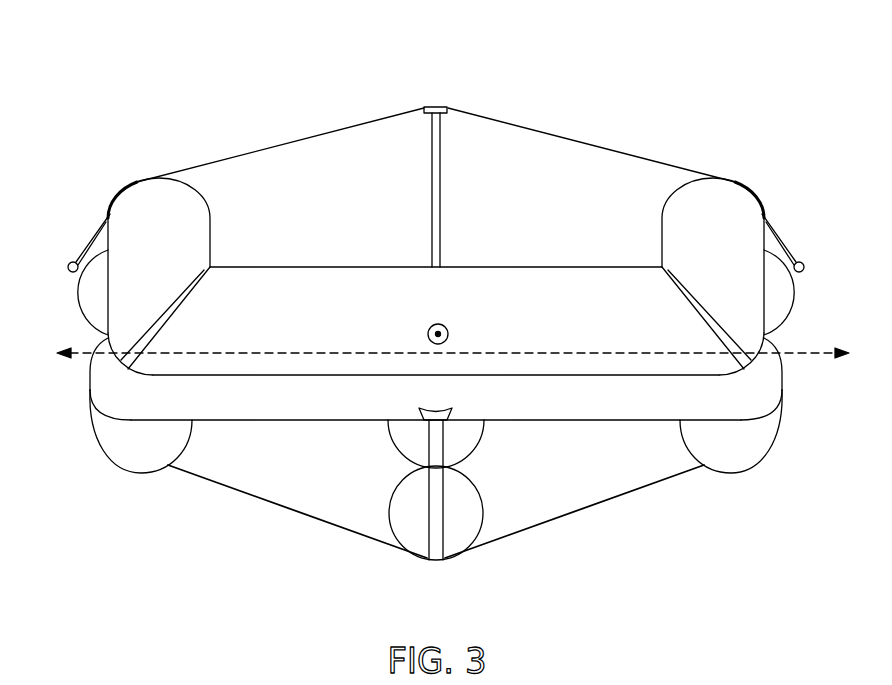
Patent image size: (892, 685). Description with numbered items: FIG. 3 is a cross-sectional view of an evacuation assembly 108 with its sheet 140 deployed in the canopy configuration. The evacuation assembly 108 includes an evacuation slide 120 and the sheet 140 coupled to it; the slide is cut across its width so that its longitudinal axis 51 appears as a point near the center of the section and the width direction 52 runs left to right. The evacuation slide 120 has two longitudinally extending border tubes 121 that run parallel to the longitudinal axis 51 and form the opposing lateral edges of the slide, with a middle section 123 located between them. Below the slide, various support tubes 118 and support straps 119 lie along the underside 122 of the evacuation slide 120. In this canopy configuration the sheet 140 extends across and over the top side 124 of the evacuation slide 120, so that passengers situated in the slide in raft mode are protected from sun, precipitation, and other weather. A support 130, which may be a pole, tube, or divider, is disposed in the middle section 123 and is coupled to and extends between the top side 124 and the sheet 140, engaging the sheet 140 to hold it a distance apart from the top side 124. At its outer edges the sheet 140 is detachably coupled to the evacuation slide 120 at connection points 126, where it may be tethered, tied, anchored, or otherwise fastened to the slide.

The evacuation assembly 108 is at (134, 60).
The evacuation slide 120 is at (562, 292).
The longitudinally extending border tubes 121 is at (164, 193).
The top side 124 is at (352, 226).
The support 130 is at (437, 190).
The middle section 123 is at (488, 92).
The sheet 140 is at (340, 110).
The connection points 126 is at (68, 270).
The longitudinal axis 51 is at (442, 325).
The width direction 52 is at (393, 353).
The support tubes 118 is at (178, 443).
The support straps 119 is at (257, 495).
The underside 122 is at (654, 549).